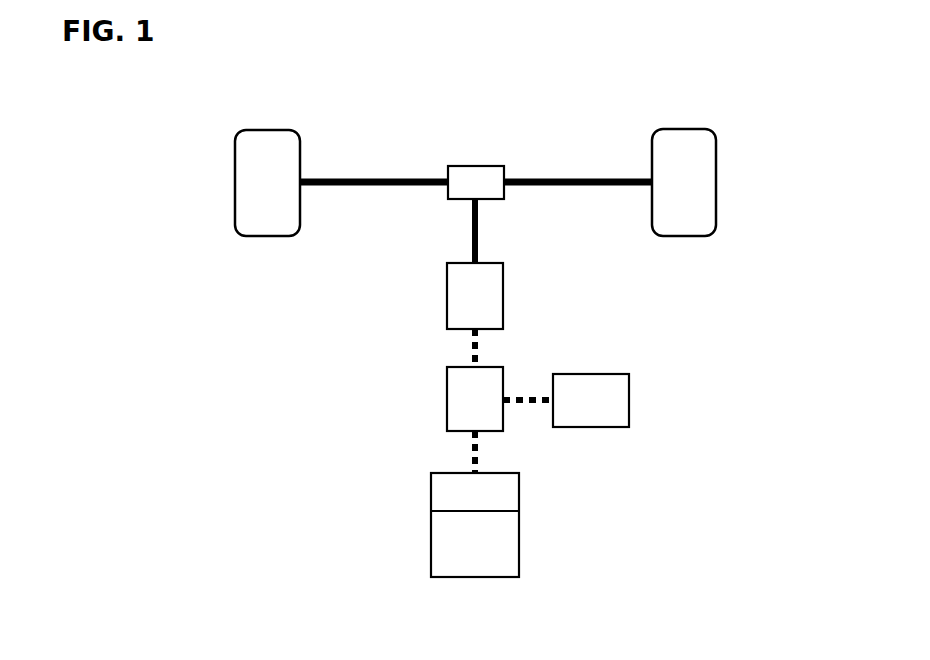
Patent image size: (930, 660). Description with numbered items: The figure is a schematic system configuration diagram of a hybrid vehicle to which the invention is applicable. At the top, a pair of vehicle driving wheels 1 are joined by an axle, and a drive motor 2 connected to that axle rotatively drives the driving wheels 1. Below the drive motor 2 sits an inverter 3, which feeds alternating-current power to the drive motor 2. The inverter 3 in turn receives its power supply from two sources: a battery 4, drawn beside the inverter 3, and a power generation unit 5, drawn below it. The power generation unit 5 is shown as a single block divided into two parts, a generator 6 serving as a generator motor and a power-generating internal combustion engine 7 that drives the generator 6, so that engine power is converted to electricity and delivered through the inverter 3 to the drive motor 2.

The vehicle driving wheels 1 is at (716, 170).
The drive motor 2 is at (447, 292).
The inverter 3 is at (447, 392).
The battery 4 is at (629, 399).
The power generation unit 5 is at (390, 519).
The generator 6 is at (431, 491).
The power-generating internal combustion engine 7 is at (431, 540).